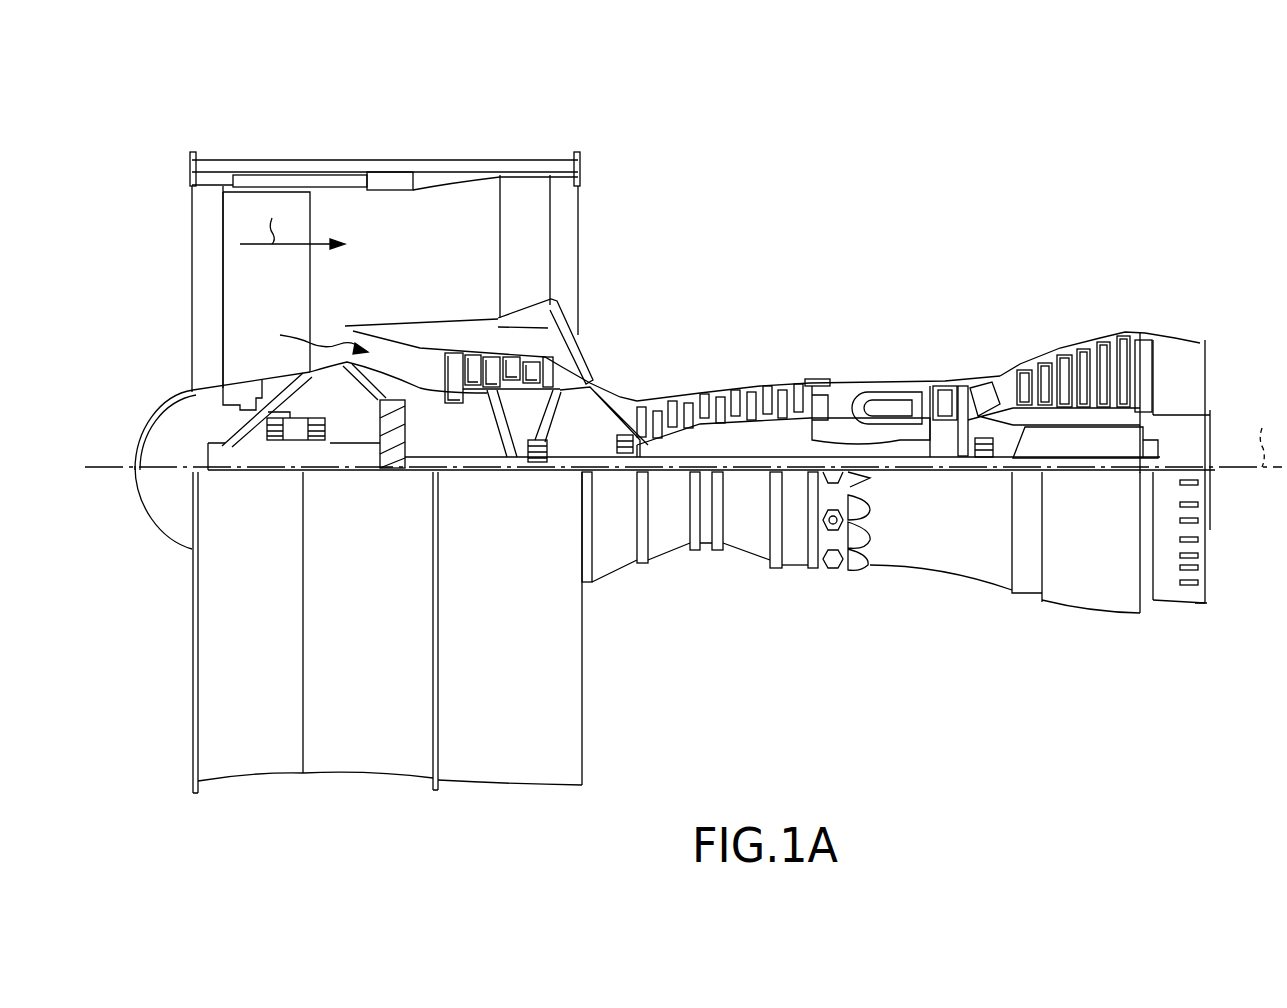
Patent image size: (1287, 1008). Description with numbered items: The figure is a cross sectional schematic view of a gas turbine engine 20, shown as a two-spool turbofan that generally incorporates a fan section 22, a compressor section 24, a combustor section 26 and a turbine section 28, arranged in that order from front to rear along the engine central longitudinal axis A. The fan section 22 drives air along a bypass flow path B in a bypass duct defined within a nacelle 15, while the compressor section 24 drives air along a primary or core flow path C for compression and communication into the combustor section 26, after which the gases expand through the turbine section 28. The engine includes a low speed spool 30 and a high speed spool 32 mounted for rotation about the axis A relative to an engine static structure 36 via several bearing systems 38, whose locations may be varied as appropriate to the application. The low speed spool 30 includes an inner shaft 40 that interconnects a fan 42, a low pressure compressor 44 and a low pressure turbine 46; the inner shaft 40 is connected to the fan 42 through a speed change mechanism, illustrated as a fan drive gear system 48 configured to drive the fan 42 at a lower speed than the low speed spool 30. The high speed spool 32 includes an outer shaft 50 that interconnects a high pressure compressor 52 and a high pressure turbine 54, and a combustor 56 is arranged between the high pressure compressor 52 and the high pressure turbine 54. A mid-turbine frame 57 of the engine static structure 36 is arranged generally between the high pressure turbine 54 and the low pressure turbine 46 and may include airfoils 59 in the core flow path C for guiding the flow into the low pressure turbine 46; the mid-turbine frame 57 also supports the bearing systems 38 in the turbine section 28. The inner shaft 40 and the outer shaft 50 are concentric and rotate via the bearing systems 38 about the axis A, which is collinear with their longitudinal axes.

The nacelle 15 is at (386, 175).
The gas turbine engine 20 is at (903, 180).
The fan section 22 is at (302, 146).
The compressor section 24 is at (630, 357).
The combustor section 26 is at (870, 347).
The turbine section 28 is at (1030, 312).
The low speed spool 30 is at (750, 474).
The high speed spool 32 is at (807, 423).
The engine static structure 36 is at (797, 545).
The bearing systems 38 is at (538, 470).
The inner shaft 40 is at (606, 474).
The fan 42 is at (276, 284).
The low pressure compressor 44 is at (520, 366).
The low pressure turbine 46 is at (1077, 353).
The fan drive gear system 48 is at (395, 472).
The outer shaft 50 is at (862, 458).
The high pressure compressor 52 is at (750, 396).
The high pressure turbine 54 is at (940, 386).
The combustor 56 is at (885, 408).
The mid-turbine frame 57 is at (990, 380).
The airfoils 59 is at (985, 398).